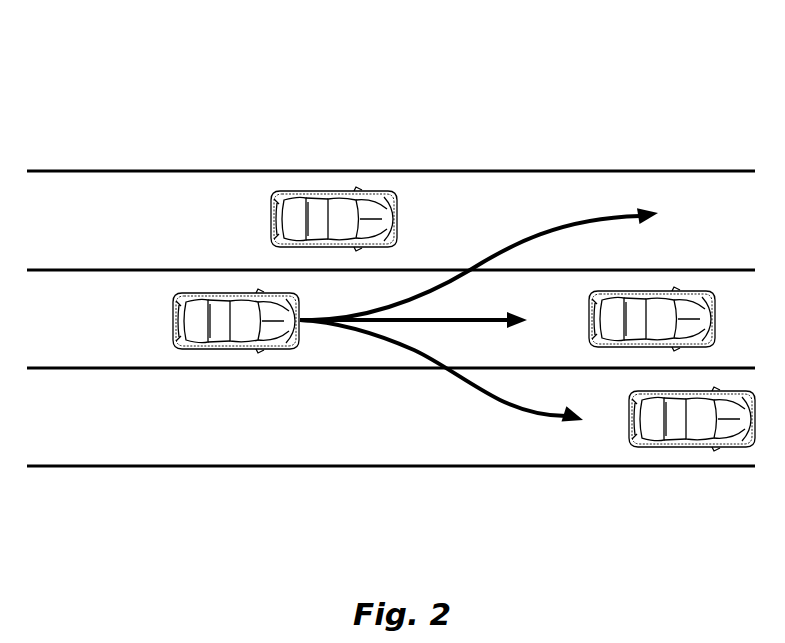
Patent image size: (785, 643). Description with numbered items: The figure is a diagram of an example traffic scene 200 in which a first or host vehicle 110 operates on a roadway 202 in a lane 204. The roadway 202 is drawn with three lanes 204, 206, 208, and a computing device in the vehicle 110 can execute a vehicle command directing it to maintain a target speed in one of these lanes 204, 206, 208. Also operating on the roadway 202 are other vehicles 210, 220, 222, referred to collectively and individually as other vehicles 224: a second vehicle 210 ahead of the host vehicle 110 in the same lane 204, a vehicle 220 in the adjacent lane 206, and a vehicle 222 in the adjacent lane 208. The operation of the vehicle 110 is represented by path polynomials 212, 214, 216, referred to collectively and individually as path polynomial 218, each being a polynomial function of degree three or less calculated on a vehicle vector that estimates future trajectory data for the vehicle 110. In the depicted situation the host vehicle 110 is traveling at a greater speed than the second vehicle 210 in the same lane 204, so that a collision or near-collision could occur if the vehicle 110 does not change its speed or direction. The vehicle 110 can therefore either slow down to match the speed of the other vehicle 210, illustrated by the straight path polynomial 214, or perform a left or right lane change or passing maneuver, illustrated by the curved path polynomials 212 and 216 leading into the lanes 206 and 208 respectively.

The traffic scene 200 is at (392, 308).
The roadway 202 is at (203, 135).
The lane 204 is at (391, 319).
The lane 206 is at (391, 220).
The lane 208 is at (391, 417).
The vehicle 110 is at (230, 343).
The other vehicle 210 is at (685, 290).
The path polynomial 212 is at (523, 237).
The path polynomial 214 is at (462, 324).
The path polynomial 216 is at (463, 390).
The path polynomial 218 is at (557, 188).
The other vehicle 220 is at (335, 196).
The other vehicle 222 is at (667, 445).
The other vehicles 224 is at (601, 512).